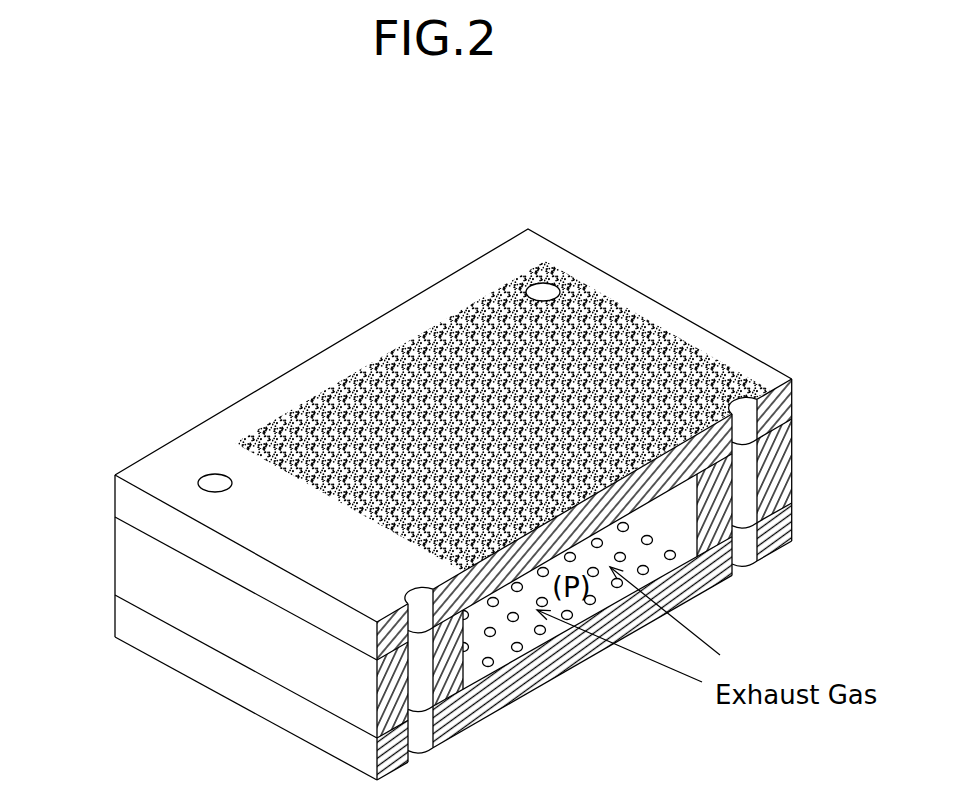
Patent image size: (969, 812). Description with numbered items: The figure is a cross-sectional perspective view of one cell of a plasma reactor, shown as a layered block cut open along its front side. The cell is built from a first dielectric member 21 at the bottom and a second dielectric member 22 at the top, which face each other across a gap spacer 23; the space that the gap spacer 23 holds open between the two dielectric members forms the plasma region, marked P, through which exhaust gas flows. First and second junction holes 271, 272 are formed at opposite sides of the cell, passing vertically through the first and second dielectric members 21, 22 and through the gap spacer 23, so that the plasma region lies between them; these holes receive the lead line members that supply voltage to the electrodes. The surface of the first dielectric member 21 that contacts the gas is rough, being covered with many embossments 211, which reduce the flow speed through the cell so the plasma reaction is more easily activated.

The first dielectric member 21 is at (133, 627).
The second dielectric member 22 is at (133, 505).
The gap spacer 23 is at (783, 467).
The embossments 211 is at (519, 652).
The first junction hole 271 is at (208, 481).
The second junction hole 272 is at (545, 290).